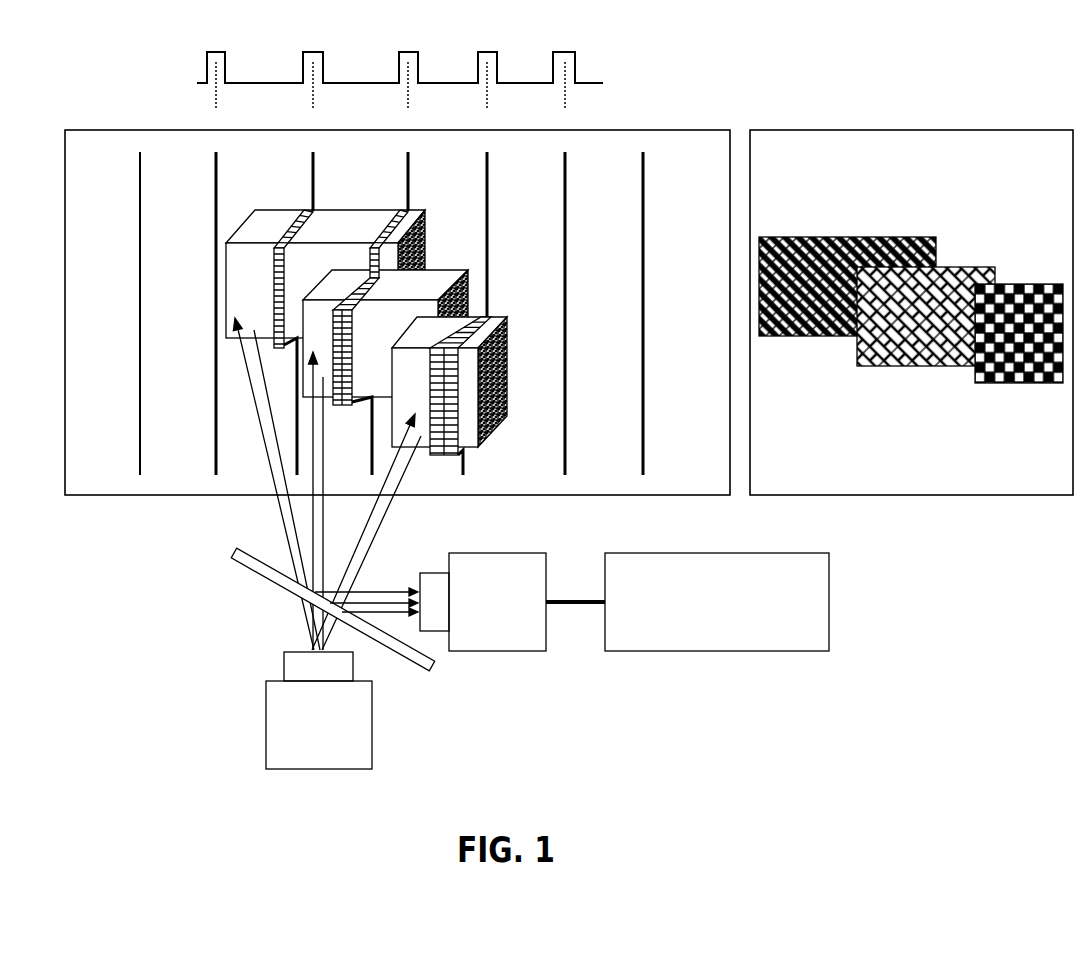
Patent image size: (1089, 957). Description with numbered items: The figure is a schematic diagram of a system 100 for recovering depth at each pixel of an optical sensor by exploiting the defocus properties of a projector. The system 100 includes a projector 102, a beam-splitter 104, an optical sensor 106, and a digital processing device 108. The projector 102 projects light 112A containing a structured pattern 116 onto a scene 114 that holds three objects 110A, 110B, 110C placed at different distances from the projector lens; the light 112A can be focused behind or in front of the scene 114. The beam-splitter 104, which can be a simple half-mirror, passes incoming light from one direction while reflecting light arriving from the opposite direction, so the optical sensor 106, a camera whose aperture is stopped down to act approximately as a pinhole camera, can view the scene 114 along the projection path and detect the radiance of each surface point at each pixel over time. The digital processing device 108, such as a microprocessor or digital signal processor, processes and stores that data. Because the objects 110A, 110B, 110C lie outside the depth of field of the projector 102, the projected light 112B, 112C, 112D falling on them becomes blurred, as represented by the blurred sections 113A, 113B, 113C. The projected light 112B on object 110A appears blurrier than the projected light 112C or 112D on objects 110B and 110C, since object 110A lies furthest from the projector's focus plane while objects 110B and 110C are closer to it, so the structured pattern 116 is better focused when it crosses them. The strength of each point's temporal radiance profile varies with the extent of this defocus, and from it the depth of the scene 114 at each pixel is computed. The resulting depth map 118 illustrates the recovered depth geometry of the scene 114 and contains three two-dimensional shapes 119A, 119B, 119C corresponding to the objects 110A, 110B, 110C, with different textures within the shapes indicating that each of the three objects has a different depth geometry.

The system 100 is at (742, 86).
The projector 102 is at (348, 710).
The beam-splitter 104 is at (302, 609).
The optical sensor 106 is at (510, 618).
The digital processing device 108 is at (747, 612).
The object 110A is at (474, 382).
The object 110B is at (448, 280).
The object 110C is at (325, 260).
The light 112A is at (401, 313).
The projected light 112B is at (487, 417).
The projected light 112C is at (407, 313).
The projected light 112D is at (285, 313).
The blurred section 113A is at (450, 455).
The blurred section 113B is at (337, 501).
The blurred section 113C is at (244, 460).
The scene 114 is at (95, 495).
The structured pattern 116 is at (435, 87).
The depth map 118 is at (915, 495).
The two-dimensional shape 119A is at (1003, 383).
The two-dimensional shape 119B is at (886, 366).
The two-dimensional shape 119C is at (789, 336).